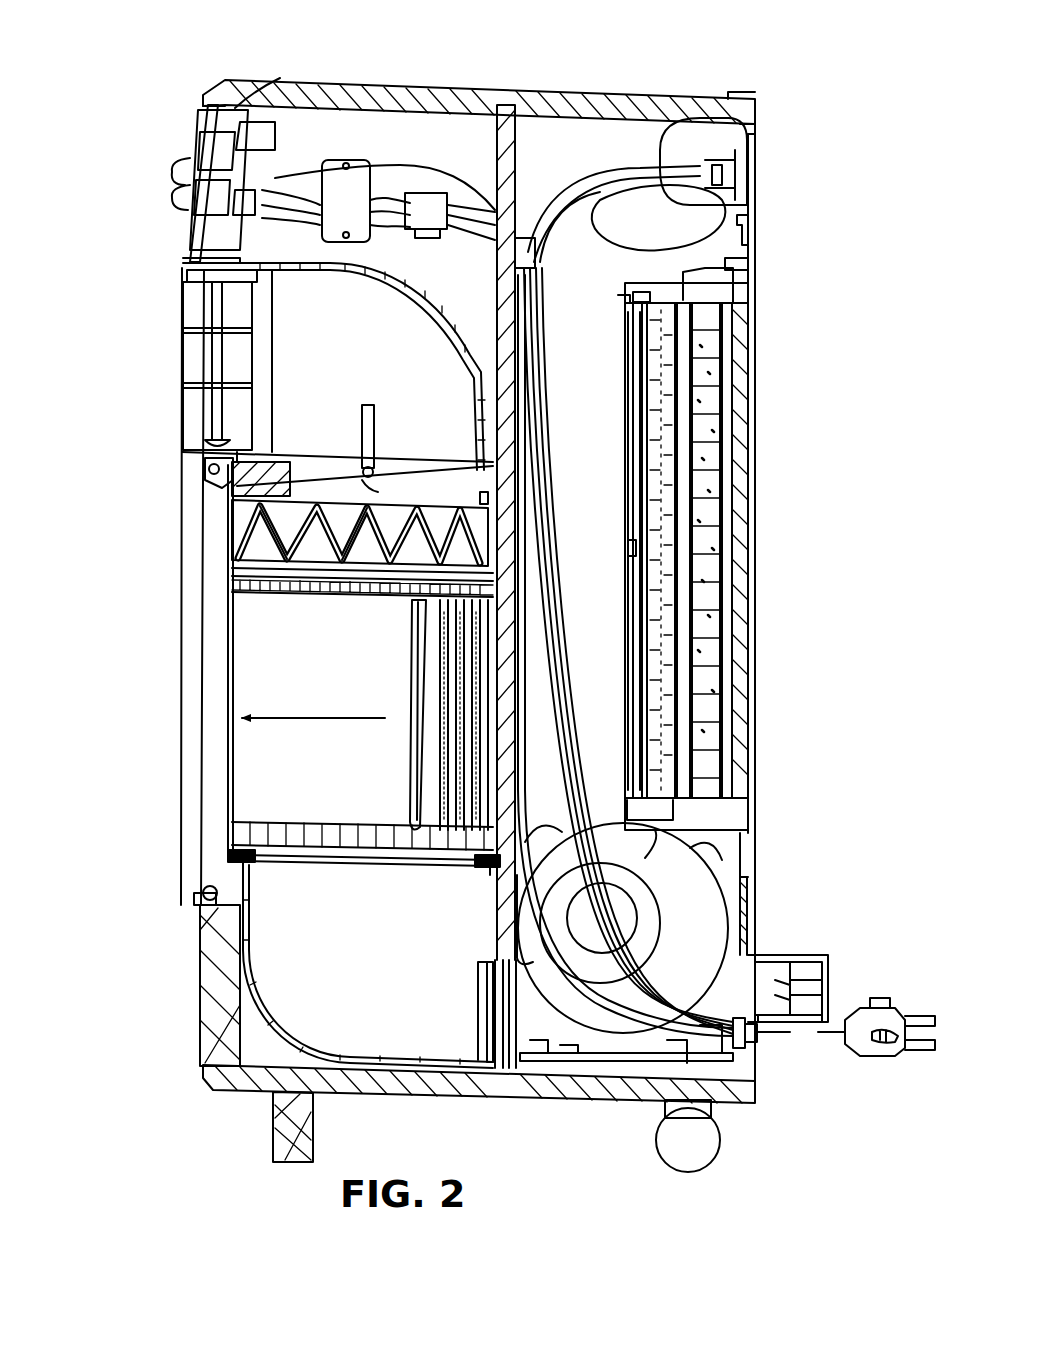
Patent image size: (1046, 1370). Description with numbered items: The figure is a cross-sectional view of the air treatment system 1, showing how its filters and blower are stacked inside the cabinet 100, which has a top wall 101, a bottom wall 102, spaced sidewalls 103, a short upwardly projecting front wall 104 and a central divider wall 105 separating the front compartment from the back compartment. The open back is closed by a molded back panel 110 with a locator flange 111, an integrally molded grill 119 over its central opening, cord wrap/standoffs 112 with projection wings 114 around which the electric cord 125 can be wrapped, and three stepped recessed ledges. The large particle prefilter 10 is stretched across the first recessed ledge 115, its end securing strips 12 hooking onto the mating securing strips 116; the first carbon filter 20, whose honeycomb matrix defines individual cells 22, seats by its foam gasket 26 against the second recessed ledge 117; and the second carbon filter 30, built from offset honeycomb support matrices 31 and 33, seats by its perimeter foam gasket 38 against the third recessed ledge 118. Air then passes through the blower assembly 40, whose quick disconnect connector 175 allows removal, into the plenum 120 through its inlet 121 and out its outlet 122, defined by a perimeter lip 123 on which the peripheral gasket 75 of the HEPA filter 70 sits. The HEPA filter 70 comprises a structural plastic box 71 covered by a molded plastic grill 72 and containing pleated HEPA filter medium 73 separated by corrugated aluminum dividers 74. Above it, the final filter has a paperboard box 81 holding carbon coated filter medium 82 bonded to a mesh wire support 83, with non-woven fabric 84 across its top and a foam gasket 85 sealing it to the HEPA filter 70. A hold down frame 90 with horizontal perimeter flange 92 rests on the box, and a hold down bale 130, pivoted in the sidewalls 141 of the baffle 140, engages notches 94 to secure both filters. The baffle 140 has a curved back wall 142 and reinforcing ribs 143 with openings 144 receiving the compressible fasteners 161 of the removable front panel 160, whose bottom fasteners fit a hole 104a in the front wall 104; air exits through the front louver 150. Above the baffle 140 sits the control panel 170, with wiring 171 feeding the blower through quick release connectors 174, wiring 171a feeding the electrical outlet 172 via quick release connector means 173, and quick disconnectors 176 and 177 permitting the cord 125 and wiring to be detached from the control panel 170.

The air treatment system 1 is at (145, 1068).
The large particle prefilter 10 is at (758, 420).
The end securing strip 12 is at (757, 262).
The first carbon filter 20 is at (692, 395).
The individual cells 22 is at (705, 492).
The foam gasket 26 is at (690, 290).
The second carbon filter 30 is at (676, 598).
The first honeycomb support matrix 31 is at (668, 360).
The second honeycomb support matrix 33 is at (642, 385).
The perimeter foam gasket 38 is at (636, 288).
The blower assembly 40 is at (600, 815).
The fine particle HEPA filter 70 is at (345, 732).
The structural plastic box 71 is at (228, 735).
The molded plastic grill 72 is at (230, 586).
The HEPA filter medium 73 is at (446, 760).
The corrugated aluminum dividers 74 is at (422, 690).
The peripheral gasket 75 is at (256, 866).
The paperboard box 81 is at (230, 517).
The activated carbon coated filter medium 82 is at (318, 548).
The mesh wire support 83 is at (305, 498).
The non-woven fabric 84 is at (360, 545).
The foam gasket 85 is at (230, 569).
The hold down frame 90 is at (340, 492).
The horizontal perimeter flange 92 is at (256, 498).
The notches 94 is at (366, 484).
The cabinet 100 is at (605, 90).
The top wall 101 is at (652, 108).
The bottom wall 102 is at (585, 1104).
The sidewalls 103 is at (602, 488).
The front wall 104 is at (198, 965).
The hole 104a is at (205, 912).
The central divider wall 105 is at (516, 140).
The back panel 110 is at (757, 890).
The locator flange 111 is at (753, 1048).
The cord wrap/standoffs 112 is at (772, 952).
The projection wing 114 is at (858, 1006).
The first recessed ledge 115 is at (752, 215).
The mating securing strips 116 is at (752, 250).
The second recessed ledge 117 is at (648, 275).
The third recessed ledge 118 is at (626, 300).
The grill 119 is at (628, 550).
The plenum 120 is at (244, 1004).
The inlet 121 is at (484, 1008).
The outlet 122 is at (352, 899).
The perimeter lip 123 is at (232, 852).
The electric cord 125 is at (397, 163).
The hold down bale 130 is at (376, 468).
The baffle 140 is at (418, 288).
The sidewalls 141 is at (350, 357).
The curved back wall 142 is at (452, 350).
The reinforcing rib 143 is at (445, 480).
The opening 144 is at (272, 452).
The front louver 150 is at (178, 336).
The front panel 160 is at (180, 670).
The compressible fastener 161 is at (212, 470).
The control panel 170 is at (160, 180).
The wiring 171 is at (540, 412).
The wiring 171a is at (592, 188).
The electrical outlet 172 is at (762, 172).
The quick release connector means 173 is at (718, 176).
The quick release connectors 174 is at (455, 192).
The quick disconnect connector 175 is at (640, 1064).
The quick disconnector 176 is at (262, 128).
The quick disconnect connector 177 is at (238, 200).